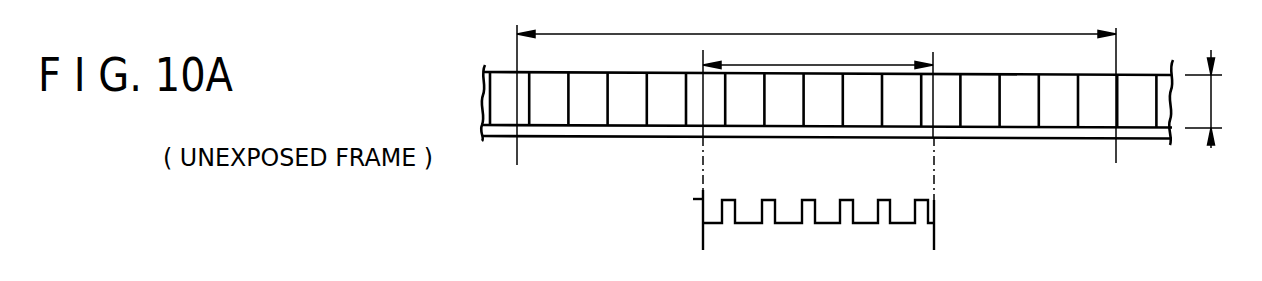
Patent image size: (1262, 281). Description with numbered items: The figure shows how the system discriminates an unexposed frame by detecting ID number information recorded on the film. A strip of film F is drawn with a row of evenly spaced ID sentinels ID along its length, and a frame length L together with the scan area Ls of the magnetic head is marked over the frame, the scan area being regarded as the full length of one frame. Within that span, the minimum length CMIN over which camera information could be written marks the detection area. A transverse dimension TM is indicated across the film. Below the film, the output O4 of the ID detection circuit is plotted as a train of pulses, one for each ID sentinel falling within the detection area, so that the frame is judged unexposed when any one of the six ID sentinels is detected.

The film F is at (548, 138).
The ID sentinels ID is at (568, 97).
The frame length L is at (816, 86).
The scan area of the magnetic head Ls is at (835, 21).
The minimum length CMIN is at (818, 120).
The film thickness/mark width TM is at (1219, 99).
The output of the ID detection circuit O4 is at (942, 220).